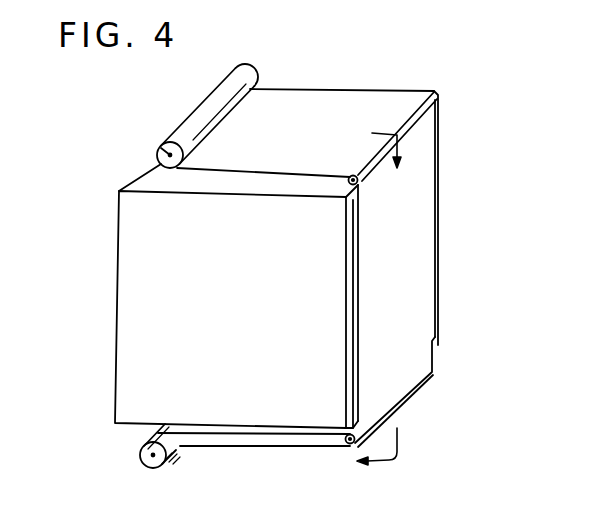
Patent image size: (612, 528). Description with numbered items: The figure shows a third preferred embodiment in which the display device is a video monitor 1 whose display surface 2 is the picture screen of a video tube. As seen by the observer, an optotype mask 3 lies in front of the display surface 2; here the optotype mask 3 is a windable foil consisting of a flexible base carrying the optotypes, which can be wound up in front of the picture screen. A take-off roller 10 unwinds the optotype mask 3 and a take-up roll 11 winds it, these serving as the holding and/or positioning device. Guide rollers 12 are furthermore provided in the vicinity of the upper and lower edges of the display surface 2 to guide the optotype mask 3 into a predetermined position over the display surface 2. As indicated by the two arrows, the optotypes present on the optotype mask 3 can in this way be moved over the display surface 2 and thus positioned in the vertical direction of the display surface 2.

The video monitor 1 is at (137, 249).
The display surface 2 is at (355, 391).
The optotype mask 3 is at (402, 383).
The take-off roller 10 is at (163, 151).
The take-up roll 11 is at (143, 457).
The guide rollers 12 is at (349, 181).